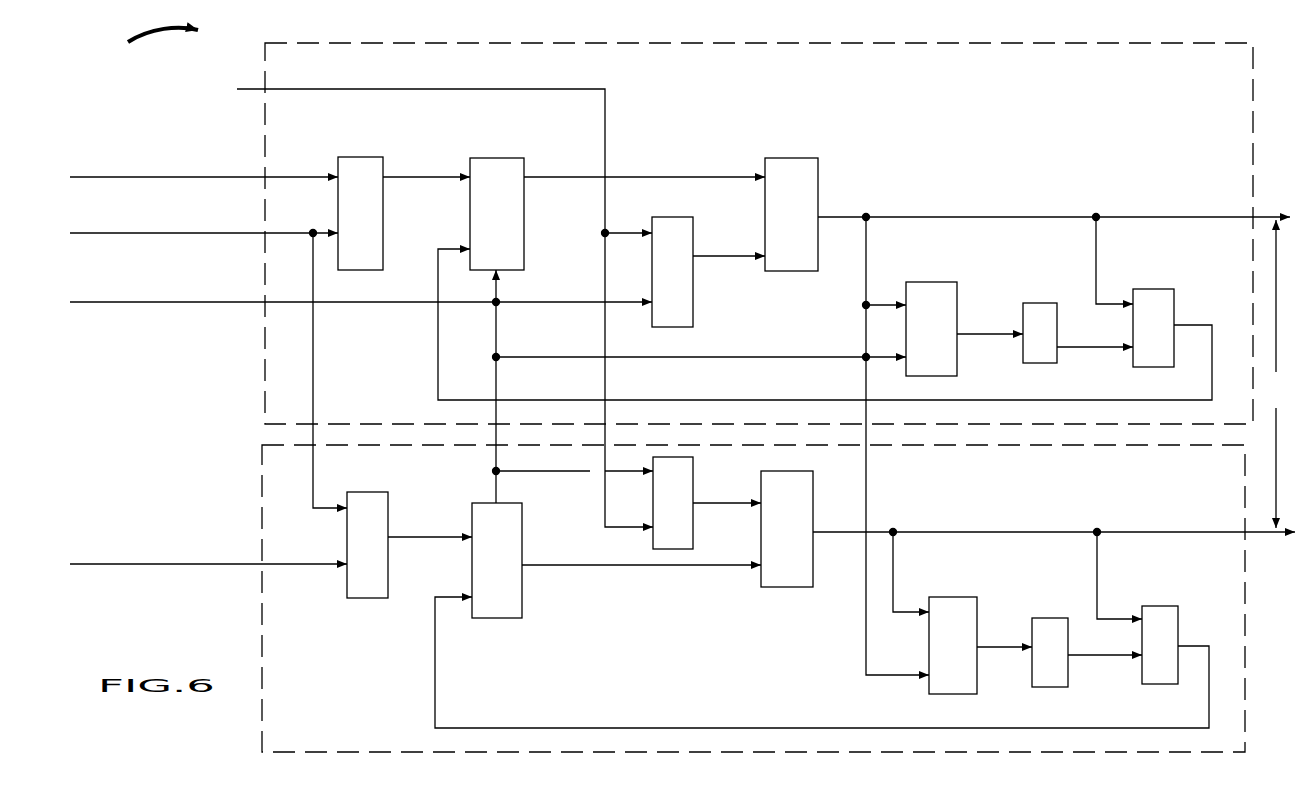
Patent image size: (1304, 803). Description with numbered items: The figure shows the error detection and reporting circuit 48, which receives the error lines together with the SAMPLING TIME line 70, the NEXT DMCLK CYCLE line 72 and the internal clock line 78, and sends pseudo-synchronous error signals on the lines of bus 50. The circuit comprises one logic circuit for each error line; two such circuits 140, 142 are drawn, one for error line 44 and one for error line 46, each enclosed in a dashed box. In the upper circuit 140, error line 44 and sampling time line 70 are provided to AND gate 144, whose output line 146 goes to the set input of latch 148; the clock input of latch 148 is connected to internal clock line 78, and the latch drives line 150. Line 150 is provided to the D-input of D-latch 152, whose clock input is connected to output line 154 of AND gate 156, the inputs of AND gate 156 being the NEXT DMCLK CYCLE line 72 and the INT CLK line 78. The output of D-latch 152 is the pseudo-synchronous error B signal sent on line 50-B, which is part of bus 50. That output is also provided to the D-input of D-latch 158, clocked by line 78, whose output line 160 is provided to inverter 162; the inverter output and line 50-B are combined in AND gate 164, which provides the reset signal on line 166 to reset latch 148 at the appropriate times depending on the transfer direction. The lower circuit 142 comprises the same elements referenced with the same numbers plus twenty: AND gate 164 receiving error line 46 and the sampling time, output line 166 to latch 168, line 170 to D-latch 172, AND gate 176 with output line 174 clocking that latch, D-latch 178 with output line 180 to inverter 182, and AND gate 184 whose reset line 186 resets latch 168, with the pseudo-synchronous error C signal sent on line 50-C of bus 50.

The error detection and reporting circuit 48 is at (154, 44).
The logic circuit 140 is at (830, 43).
The logic circuit 142 is at (262, 530).
The NEXT DMCLK CYCLE line 72 is at (445, 295).
The error line 44 is at (204, 166).
The SAMPLING TIME line 70 is at (252, 233).
The internal clock line 78 is at (361, 292).
The error line 46 is at (208, 553).
The AND gate 144 is at (383, 157).
The output line 146 is at (447, 177).
The latch 148 is at (524, 158).
The line 150 is at (672, 177).
The D-latch 152 is at (818, 158).
The output line 154 is at (752, 256).
The AND gate 156 is at (693, 217).
The D-latch 158 is at (932, 282).
The output line 160 is at (1016, 334).
The inverter 162 is at (1053, 303).
The AND gate 164 is at (1145, 289).
The reset line 166 is at (1115, 400).
The latch 168 is at (522, 607).
The line 170 is at (667, 566).
The D-latch 172 is at (790, 588).
The output line 174 is at (737, 503).
The AND gate 176 is at (693, 457).
The D-latch 178 is at (992, 584).
The output line 180 is at (985, 651).
The inverter 182 is at (1079, 596).
The AND gate 184 is at (1176, 606).
The reset line 186 is at (1062, 728).
The bus 50 is at (1273, 374).
The pseudo synchro error B line 50-B is at (1235, 217).
The pseudo synchro error C line 50-C is at (1054, 564).